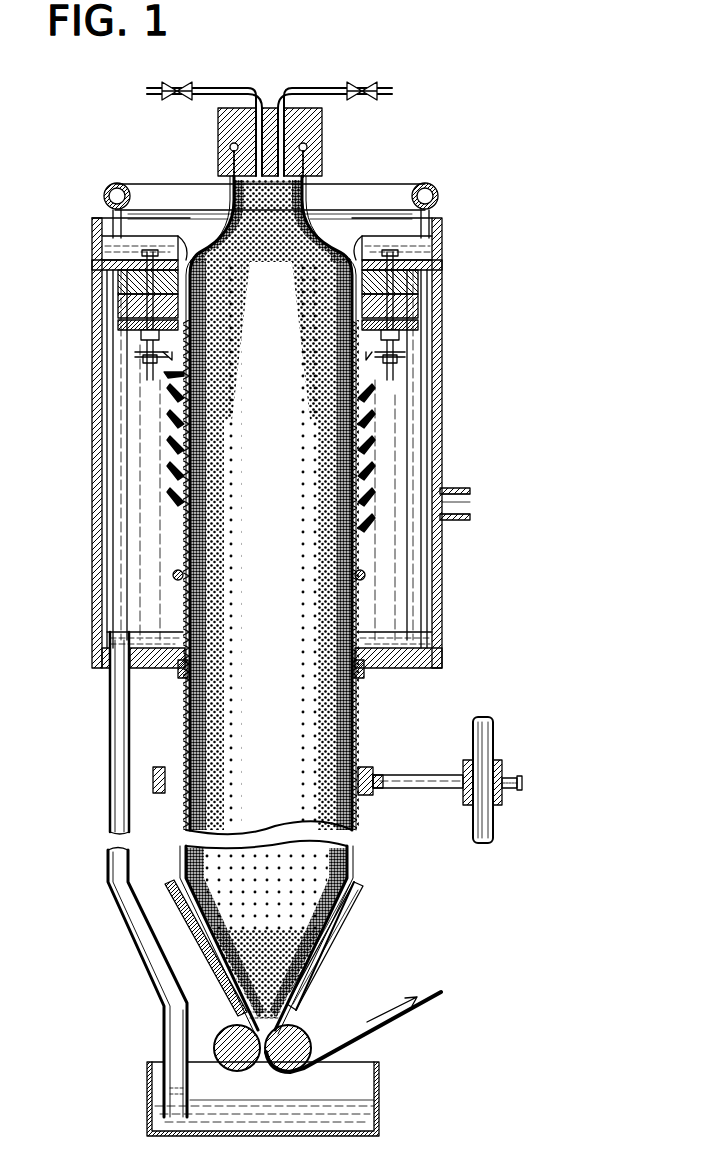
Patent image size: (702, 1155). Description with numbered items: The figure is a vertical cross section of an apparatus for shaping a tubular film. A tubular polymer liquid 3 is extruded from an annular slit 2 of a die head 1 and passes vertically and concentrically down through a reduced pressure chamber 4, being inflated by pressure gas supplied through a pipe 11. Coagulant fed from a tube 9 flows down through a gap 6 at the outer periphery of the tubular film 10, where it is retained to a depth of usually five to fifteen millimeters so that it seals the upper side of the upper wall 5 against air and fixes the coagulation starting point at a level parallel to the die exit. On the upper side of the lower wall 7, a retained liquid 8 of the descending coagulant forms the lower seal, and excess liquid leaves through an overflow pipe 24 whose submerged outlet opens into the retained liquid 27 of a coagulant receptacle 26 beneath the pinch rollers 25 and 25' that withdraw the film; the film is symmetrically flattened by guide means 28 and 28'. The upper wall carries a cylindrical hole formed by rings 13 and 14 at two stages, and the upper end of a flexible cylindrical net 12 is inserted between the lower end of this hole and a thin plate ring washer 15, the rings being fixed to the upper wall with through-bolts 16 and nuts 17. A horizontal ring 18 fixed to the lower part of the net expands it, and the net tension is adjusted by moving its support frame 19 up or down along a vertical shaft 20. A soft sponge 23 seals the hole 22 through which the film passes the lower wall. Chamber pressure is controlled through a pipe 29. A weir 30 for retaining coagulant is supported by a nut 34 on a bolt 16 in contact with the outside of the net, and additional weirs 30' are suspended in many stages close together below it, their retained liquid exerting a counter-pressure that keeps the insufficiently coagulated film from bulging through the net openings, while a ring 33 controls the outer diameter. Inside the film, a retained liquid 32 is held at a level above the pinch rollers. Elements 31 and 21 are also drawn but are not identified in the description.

The die head 1 is at (312, 125).
The annular slit 2 is at (230, 143).
The tubular polymer liquid 3 is at (225, 203).
The reduced pressure chamber 4 is at (130, 490).
The upper wall 5 is at (420, 257).
The gap 6 is at (176, 240).
The lower wall 7 is at (410, 668).
The retained liquid 8 is at (398, 634).
The tube 9 is at (383, 192).
The tubular film 10 is at (256, 218).
The pipe 11 is at (320, 88).
The cylindrical net 12 is at (182, 546).
The ring 13 is at (418, 283).
The ring 14 is at (418, 307).
The thin plate ring washer 15 is at (418, 330).
The through-bolt 16 is at (380, 345).
The nut 17 is at (418, 345).
The horizontal ring 18 is at (368, 767).
The support frame 19 is at (428, 776).
The vertical shaft 20 is at (493, 736).
The nut 21 is at (520, 778).
The hole 22 is at (178, 675).
The soft sponge 23 is at (360, 675).
The overflow pipe 24 is at (108, 680).
The pinch roller 25 is at (225, 1036).
The pinch roller 25' is at (353, 1032).
The coagulant receptacle 26 is at (147, 1078).
The retained liquid 27 is at (230, 1118).
The guide means 28 is at (191, 935).
The guide means 28' is at (347, 934).
The pipe 29 is at (460, 488).
The weir 30 is at (287, 396).
The additional weir 30' is at (291, 480).
The gas outlet pipe 31 is at (214, 88).
The retained liquid 32 is at (262, 1008).
The ring 33 is at (366, 572).
The nut 34 is at (140, 372).